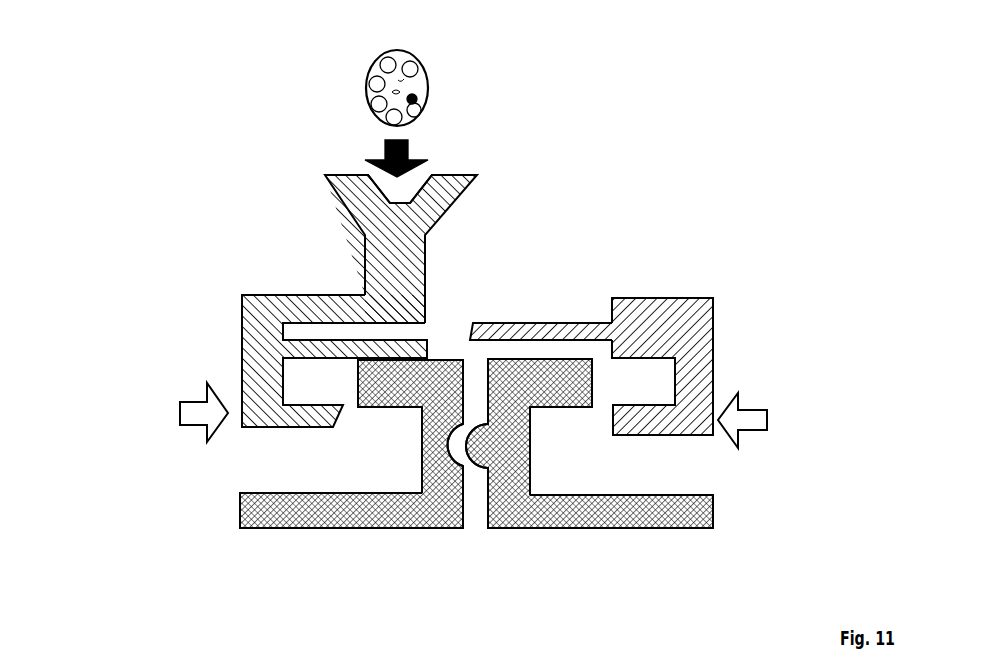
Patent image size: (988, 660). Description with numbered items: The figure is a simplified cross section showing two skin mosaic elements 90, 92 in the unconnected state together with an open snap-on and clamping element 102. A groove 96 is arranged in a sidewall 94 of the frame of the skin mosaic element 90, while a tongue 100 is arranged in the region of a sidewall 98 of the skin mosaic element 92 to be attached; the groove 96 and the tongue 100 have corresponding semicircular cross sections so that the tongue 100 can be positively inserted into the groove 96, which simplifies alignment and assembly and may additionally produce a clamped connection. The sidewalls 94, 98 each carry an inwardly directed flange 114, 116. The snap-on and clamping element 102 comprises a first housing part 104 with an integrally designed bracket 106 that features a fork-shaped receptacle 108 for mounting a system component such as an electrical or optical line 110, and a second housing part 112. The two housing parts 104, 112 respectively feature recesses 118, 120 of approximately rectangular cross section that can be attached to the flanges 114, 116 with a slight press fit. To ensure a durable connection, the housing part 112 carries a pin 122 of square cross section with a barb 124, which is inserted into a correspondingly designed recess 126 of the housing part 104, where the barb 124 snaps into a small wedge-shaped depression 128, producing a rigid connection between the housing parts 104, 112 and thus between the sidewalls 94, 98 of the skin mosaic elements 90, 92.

The skin mosaic element 90 is at (236, 507).
The skin mosaic element 92 is at (714, 510).
The sidewall 94 is at (444, 445).
The groove 96 is at (422, 450).
The sidewall 98 is at (513, 467).
The tongue 100 is at (530, 478).
The snap-on and clamping element 102 is at (493, 323).
The housing part 104 is at (242, 313).
The bracket 106 is at (365, 237).
The fork-shaped receptacle 108 is at (325, 175).
The electrical or optical line 110 is at (415, 82).
The housing part 112 is at (697, 345).
The flange 114 is at (410, 393).
The flange 116 is at (572, 393).
The recess 118 is at (295, 373).
The recess 120 is at (650, 378).
The pin 122 is at (713, 298).
The barb 124 is at (573, 322).
The recess 126 is at (298, 296).
The wedge-shaped depression 128 is at (350, 332).